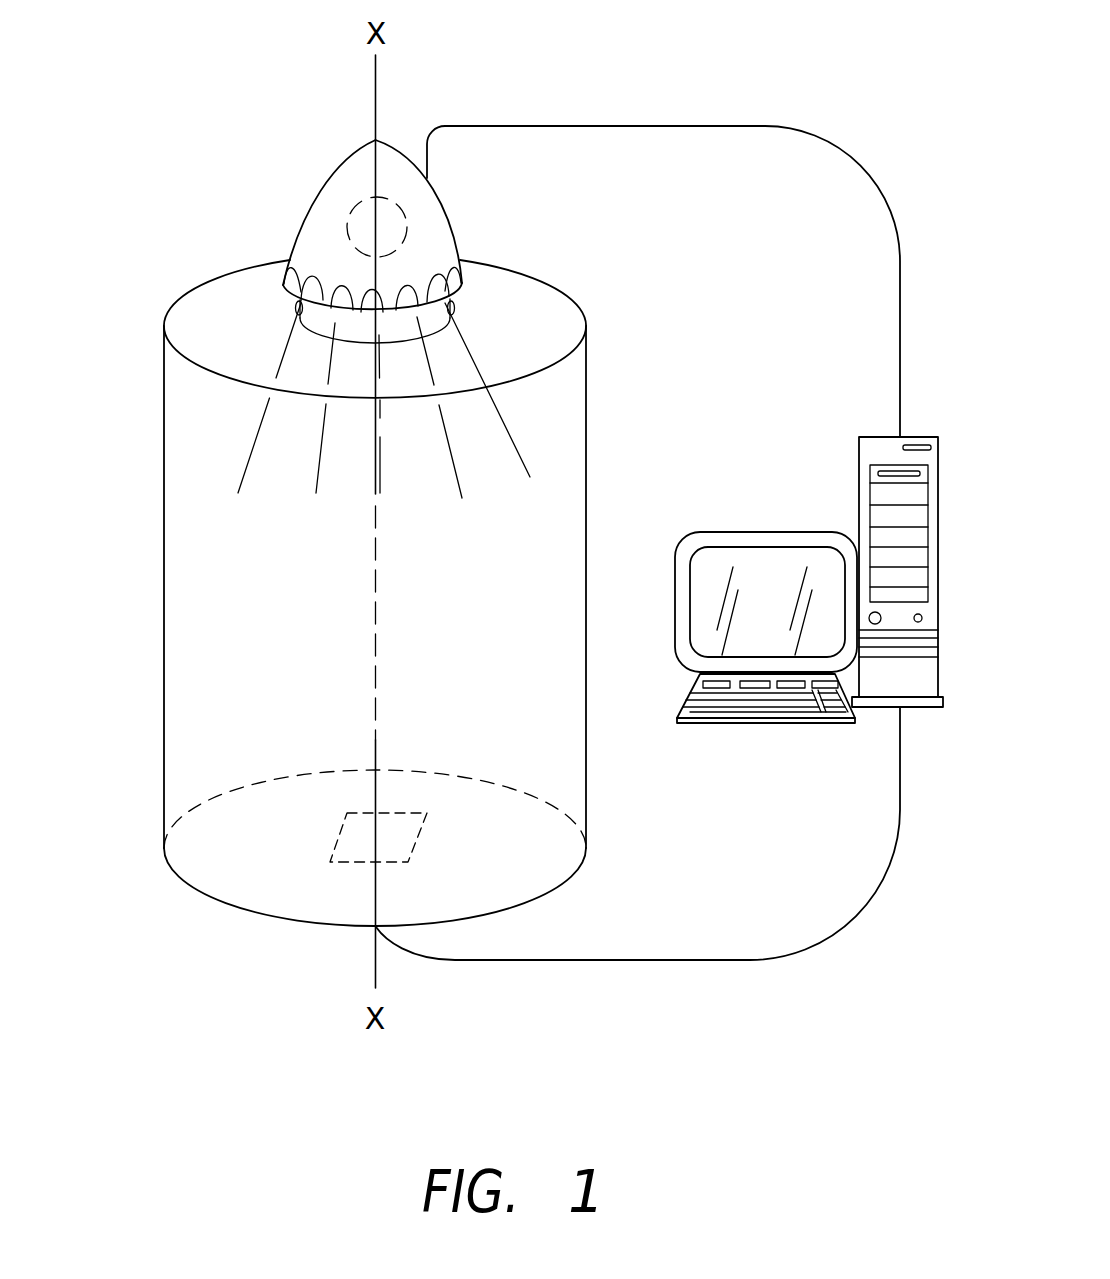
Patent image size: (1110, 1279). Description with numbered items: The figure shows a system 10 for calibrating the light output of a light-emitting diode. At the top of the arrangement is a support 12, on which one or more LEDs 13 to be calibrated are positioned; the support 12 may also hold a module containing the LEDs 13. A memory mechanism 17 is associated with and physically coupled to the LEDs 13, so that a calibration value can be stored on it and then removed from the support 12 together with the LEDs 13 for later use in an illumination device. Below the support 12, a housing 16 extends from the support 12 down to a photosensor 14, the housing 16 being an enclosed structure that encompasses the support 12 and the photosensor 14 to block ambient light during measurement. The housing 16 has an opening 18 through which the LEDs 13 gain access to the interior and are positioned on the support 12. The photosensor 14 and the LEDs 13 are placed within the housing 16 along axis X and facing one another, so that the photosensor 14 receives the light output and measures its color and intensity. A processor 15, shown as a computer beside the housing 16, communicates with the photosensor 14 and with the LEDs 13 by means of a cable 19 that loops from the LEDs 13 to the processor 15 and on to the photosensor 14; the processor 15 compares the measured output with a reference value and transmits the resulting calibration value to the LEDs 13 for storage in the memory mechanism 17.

The system 10 is at (738, 50).
The support 12 is at (362, 141).
The LEDs 13 is at (292, 253).
The photosensor 14 is at (337, 865).
The processor 15 is at (858, 443).
The housing 16 is at (163, 490).
The memory mechanism 17 is at (347, 217).
The opening 18 is at (384, 400).
The cable 19 is at (822, 142).